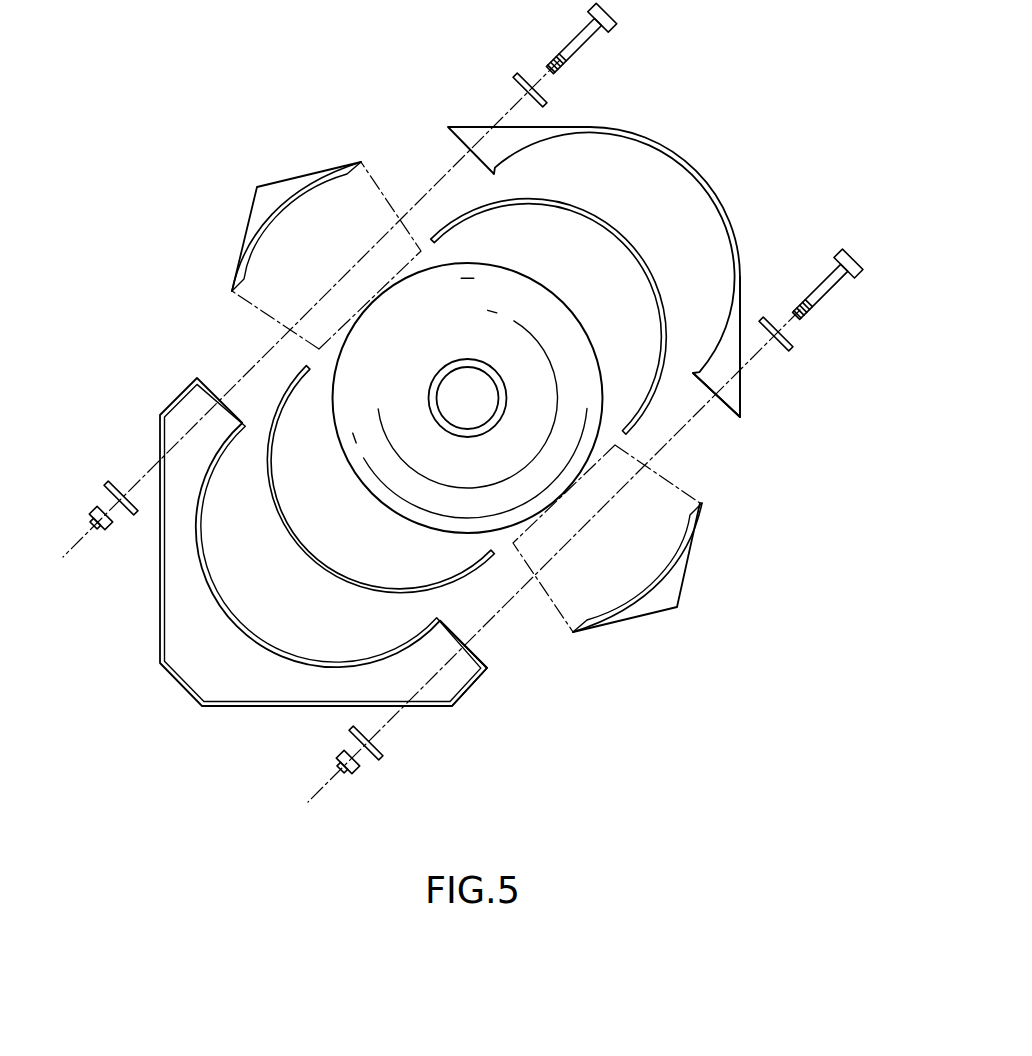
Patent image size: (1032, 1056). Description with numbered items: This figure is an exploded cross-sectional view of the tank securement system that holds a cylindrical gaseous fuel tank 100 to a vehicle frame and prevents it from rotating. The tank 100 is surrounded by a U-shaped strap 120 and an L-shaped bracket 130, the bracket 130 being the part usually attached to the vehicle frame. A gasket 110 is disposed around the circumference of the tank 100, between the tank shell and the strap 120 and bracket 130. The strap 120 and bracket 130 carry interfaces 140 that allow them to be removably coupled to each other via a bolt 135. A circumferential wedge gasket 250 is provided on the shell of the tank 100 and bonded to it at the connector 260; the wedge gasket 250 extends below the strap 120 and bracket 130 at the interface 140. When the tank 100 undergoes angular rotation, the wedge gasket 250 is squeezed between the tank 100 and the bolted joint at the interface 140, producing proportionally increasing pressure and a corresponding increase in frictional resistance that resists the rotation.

The cylindrical gaseous fuel tank 100 is at (415, 493).
The gasket 110 is at (462, 215).
The U-shaped strap 120 is at (738, 225).
The L-shaped bracket 130 is at (157, 408).
The bolt 135 is at (832, 290).
The interface 140 is at (740, 420).
The circumferential wedge gasket 250 is at (265, 198).
The connector 260 is at (318, 216).